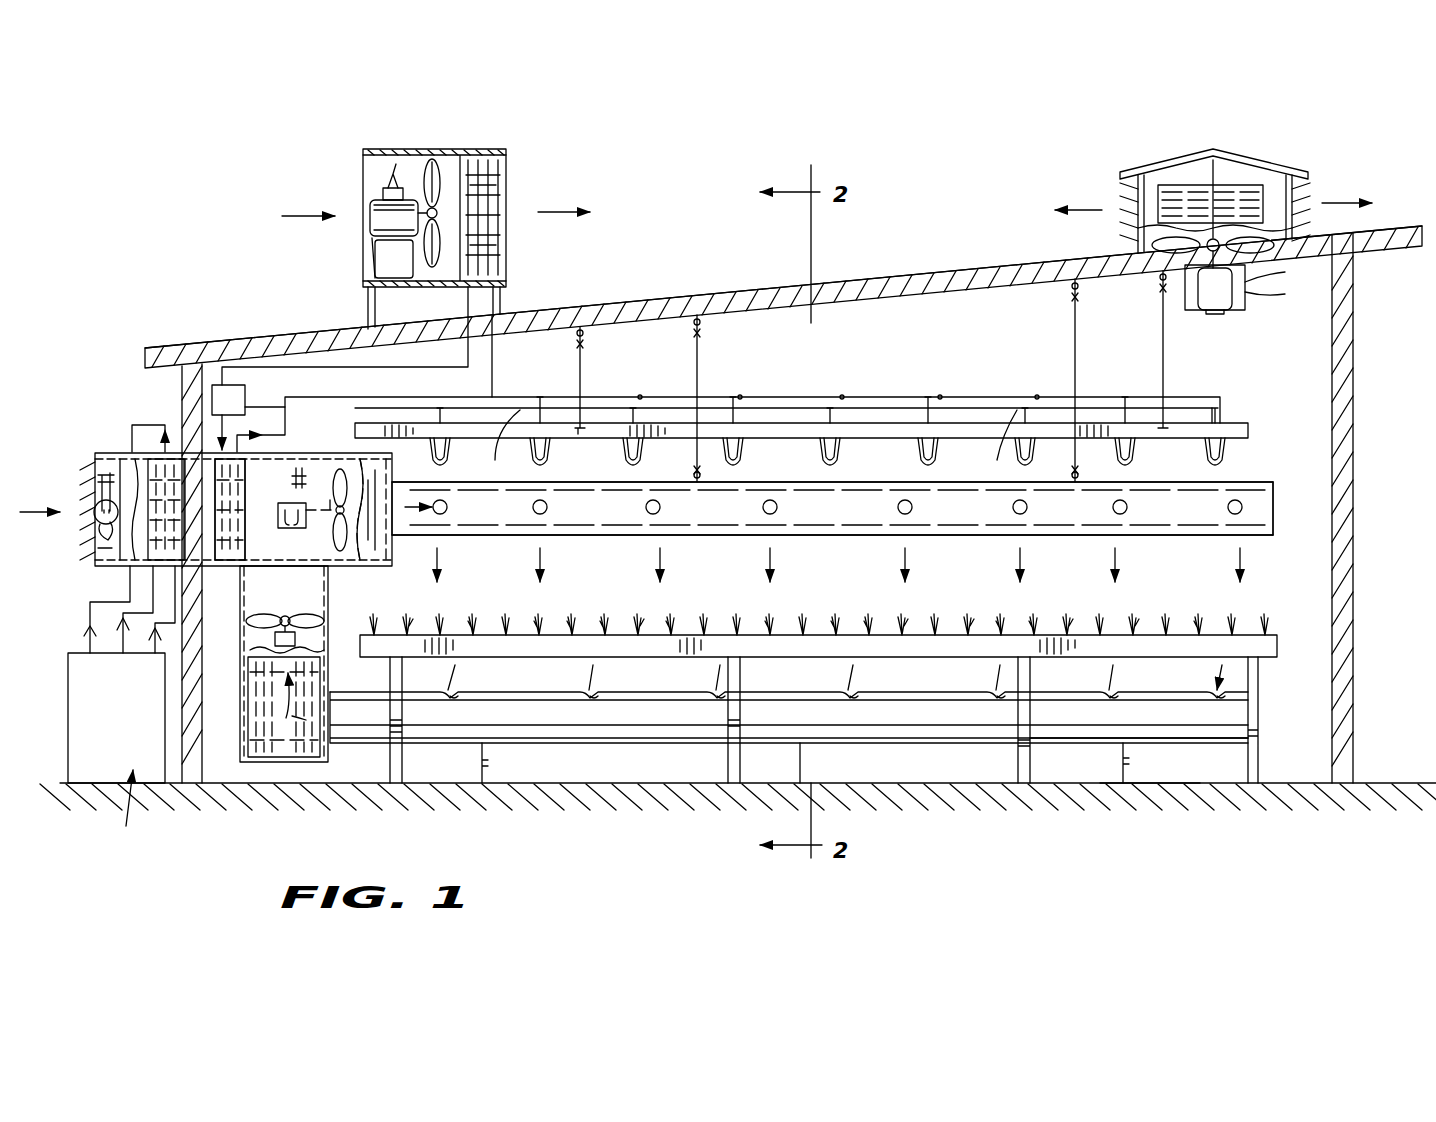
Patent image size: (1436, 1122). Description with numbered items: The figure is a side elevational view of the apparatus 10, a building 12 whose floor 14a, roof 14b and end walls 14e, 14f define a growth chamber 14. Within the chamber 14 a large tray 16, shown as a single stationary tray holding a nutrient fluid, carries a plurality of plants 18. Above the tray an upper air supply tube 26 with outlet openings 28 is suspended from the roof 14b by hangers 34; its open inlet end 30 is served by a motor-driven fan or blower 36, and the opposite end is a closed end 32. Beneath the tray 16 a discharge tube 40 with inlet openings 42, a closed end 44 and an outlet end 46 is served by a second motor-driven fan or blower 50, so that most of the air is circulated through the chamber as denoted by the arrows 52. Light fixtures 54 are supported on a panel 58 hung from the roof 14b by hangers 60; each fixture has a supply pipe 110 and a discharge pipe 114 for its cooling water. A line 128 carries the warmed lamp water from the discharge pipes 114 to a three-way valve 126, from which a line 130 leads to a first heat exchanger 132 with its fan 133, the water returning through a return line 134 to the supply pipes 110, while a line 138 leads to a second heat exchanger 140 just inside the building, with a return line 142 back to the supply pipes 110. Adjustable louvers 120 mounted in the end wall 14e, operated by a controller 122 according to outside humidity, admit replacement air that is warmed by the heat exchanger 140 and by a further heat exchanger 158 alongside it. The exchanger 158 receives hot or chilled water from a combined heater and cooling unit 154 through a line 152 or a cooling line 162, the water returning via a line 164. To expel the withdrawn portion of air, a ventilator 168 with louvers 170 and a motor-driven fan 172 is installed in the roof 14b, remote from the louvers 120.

The apparatus 10 is at (1105, 795).
The building 12 is at (932, 256).
The growth chamber 14 is at (1300, 440).
The floor 14a is at (581, 783).
The roof 14b is at (655, 295).
The end wall 14e is at (182, 380).
The end wall 14f is at (1354, 350).
The tray 16 is at (1276, 647).
The plants 18 is at (865, 623).
The upper air supply tube 26 is at (972, 536).
The outlet openings 28 is at (642, 507).
The open inlet end 30 is at (495, 535).
The closed end 32 is at (1273, 513).
The hangers 34 is at (700, 345).
The motor-driven fan or blower 36 is at (345, 486).
The discharge tubes 40 is at (840, 743).
The inlet openings 42 is at (995, 696).
The closed end 44 is at (1240, 740).
The outlet end 46 is at (334, 752).
The motor-driven fan or blower 50 is at (300, 608).
The arrows 52 is at (658, 554).
The light units or fixtures 54 is at (815, 458).
The panel 58 is at (891, 421).
The hangers 60 is at (580, 365).
The supply pipes 110 is at (653, 397).
The discharge pipes 114 is at (748, 446).
The adjustable louvers 120 is at (82, 505).
The controller 122 is at (100, 524).
The 3-way valve 126 is at (222, 385).
The line 128 is at (348, 420).
The line 130 is at (420, 368).
The first heat exchanger 132 is at (506, 182).
The motor-driven fan or blower 133 is at (432, 162).
The return line 134 is at (494, 368).
The line 138 is at (220, 430).
The second heat exchanger 140 is at (284, 528).
The return line 142 is at (264, 395).
The line 152 is at (145, 667).
The combined hot water heater and cooling unit 154 is at (118, 757).
The heat exchanger 158 is at (173, 496).
The cooling line 162 is at (127, 630).
The line 164 is at (95, 645).
The ventilator 168 is at (1268, 162).
The louvers 170 is at (1190, 190).
The motor-driven fan or blower 172 is at (1160, 241).